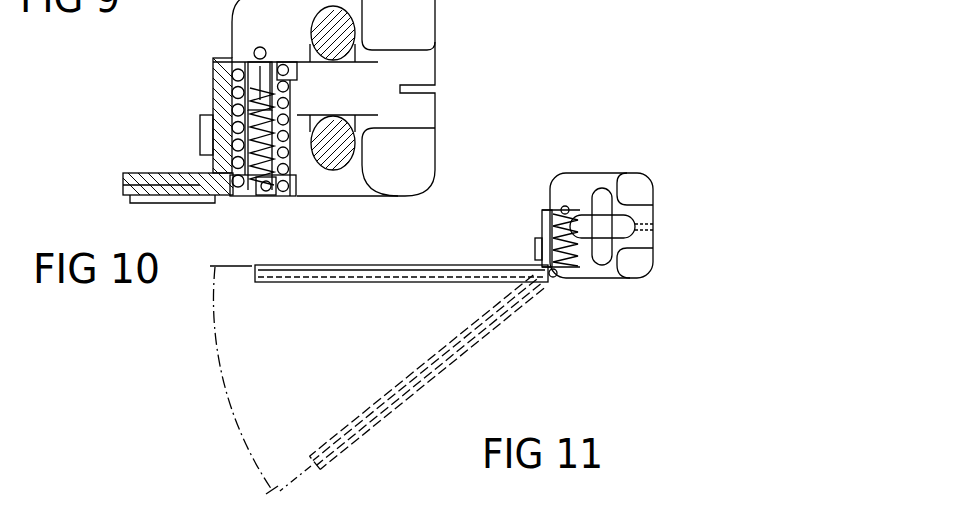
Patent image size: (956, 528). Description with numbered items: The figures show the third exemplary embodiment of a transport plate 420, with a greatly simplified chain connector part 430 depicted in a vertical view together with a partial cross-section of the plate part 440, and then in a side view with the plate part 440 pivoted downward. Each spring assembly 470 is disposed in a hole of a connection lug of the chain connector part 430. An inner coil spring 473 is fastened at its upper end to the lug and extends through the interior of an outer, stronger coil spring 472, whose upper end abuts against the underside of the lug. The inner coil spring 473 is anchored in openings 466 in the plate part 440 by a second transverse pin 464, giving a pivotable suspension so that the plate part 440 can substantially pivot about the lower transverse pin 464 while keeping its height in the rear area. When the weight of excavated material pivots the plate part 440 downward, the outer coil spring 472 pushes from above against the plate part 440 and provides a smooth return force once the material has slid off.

In FIG. 10, the chain connector part 430 is at (455, 32).
In FIG. 11, the chain connector part 430 is at (645, 292).
In FIG. 10, the spring assembly 470 is at (302, 88).
In FIG. 10, the outer coil spring 472 is at (236, 90).
In FIG. 10, the inner coil spring 473 is at (234, 112).
In FIG. 10, the openings 466 is at (242, 194).
In FIG. 10, the second transverse pin 464 is at (266, 197).
In FIG. 11, the plate part 440 is at (297, 293).
In FIG. 11, the transport plate 420 is at (555, 318).